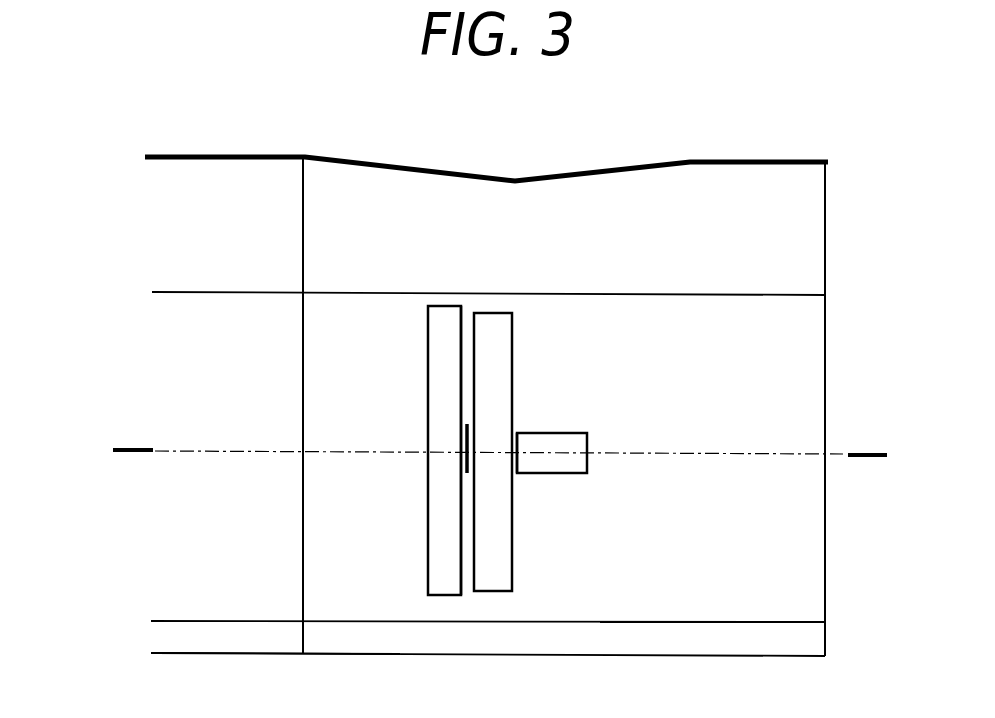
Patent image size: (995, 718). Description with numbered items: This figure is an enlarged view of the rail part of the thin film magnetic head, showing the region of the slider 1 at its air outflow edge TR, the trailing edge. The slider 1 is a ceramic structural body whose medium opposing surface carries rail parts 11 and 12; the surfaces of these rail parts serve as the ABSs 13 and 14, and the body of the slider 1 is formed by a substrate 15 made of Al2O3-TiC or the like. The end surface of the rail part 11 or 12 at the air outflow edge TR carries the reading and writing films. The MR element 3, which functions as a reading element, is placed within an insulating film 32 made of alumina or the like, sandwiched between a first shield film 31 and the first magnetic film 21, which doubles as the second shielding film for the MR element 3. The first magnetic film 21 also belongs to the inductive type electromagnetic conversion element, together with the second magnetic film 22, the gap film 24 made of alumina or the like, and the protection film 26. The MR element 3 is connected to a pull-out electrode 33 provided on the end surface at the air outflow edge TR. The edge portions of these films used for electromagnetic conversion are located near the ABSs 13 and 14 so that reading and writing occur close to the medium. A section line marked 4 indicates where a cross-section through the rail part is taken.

The slider 1 is at (834, 210).
The magneto-resistive effective element 3 is at (465, 437).
The section line 4- 4 is at (126, 458).
The rail part 11 is at (443, 258).
The rail part 12 is at (208, 291).
The ABS 13 is at (435, 646).
The ABS 14 is at (188, 592).
The substrate 15 is at (232, 607).
The first magnetic film 21 is at (498, 532).
The second magnetic film 22 is at (573, 467).
The gap film 24 is at (517, 445).
The protection film 26 is at (770, 617).
The first shield film 31 is at (432, 518).
The insulating film 32 is at (395, 450).
The pull-out electrode 33 is at (468, 348).
The air outflow edge TR is at (827, 349).